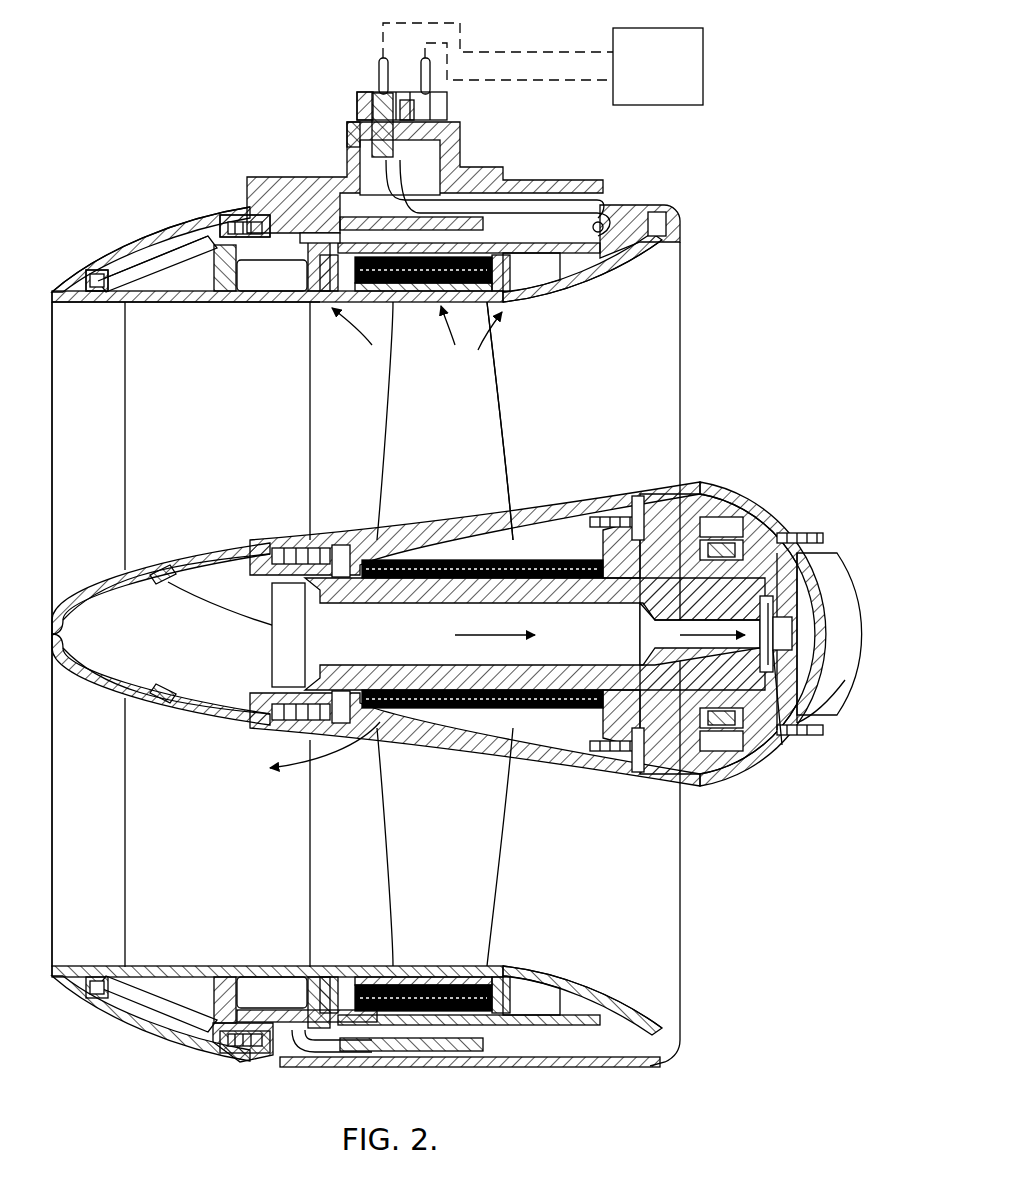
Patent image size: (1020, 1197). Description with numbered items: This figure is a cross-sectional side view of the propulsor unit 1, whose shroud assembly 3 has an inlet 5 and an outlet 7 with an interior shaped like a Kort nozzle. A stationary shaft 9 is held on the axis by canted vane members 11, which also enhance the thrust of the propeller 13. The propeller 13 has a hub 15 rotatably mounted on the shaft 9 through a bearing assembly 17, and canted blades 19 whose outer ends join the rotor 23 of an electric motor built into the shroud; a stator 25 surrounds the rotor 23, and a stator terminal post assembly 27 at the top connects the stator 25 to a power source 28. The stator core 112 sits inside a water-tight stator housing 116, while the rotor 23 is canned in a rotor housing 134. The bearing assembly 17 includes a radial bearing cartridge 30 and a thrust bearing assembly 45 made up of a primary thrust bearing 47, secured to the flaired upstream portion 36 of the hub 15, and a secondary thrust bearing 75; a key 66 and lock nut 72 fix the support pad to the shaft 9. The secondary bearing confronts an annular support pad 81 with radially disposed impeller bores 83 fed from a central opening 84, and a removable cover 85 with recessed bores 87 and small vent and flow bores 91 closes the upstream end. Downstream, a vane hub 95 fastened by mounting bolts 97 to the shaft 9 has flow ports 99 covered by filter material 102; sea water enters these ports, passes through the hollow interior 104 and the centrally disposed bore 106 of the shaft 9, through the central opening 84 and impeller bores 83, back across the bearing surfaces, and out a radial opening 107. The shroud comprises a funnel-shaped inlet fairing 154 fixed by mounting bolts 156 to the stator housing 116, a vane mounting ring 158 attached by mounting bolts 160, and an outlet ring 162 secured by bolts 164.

The propulsor unit 1 is at (135, 205).
The shroud assembly 3 is at (135, 247).
The inlet 5 is at (690, 300).
The outlet 7 is at (52, 325).
The stationary shaft 9 is at (395, 606).
The vane members 11 is at (212, 451).
The propeller 13 is at (498, 408).
The hub 15 is at (520, 735).
The bearing assembly 17 is at (585, 535).
The canted blades 19 is at (429, 457).
The rotor 23 is at (530, 972).
The stator 25 is at (470, 1065).
The stator terminal post assembly 27 is at (345, 145).
The power source 28 is at (645, 80).
The radial bearing cartridge 30 is at (470, 545).
The flaired upstream portion of the hub 36 is at (612, 768).
The thrust bearing assembly 45 is at (642, 495).
The primary thrust bearing 47 is at (655, 782).
The key 66 is at (680, 622).
The lock nut 72 is at (782, 695).
The secondary thrust bearing 75 is at (788, 492).
The annular support pad 81 is at (797, 582).
The impeller bores 83 is at (785, 657).
The central opening 84 is at (785, 627).
The removable cover 85 is at (858, 702).
The recessed bores 87 is at (742, 490).
The vent and flow bores 91 is at (830, 740).
The vane hub 95 is at (115, 578).
The mounting bolts 97 is at (300, 545).
The flow ports 99 is at (183, 565).
The filter material 102 is at (160, 600).
The hollow interior 104 is at (190, 650).
The centrally disposed bore 106 is at (408, 648).
The radial opening 107 is at (390, 720).
The stator core 112 is at (422, 212).
The stator housing 116 is at (545, 178).
The rotor housing 134 is at (440, 312).
The inlet fairing 154 is at (608, 285).
The mounting bolts 156 is at (668, 218).
The vane mounting ring 158 is at (182, 302).
The mounting bolts 160 is at (215, 225).
The outlet ring 162 is at (96, 300).
The bolts 164 is at (88, 272).